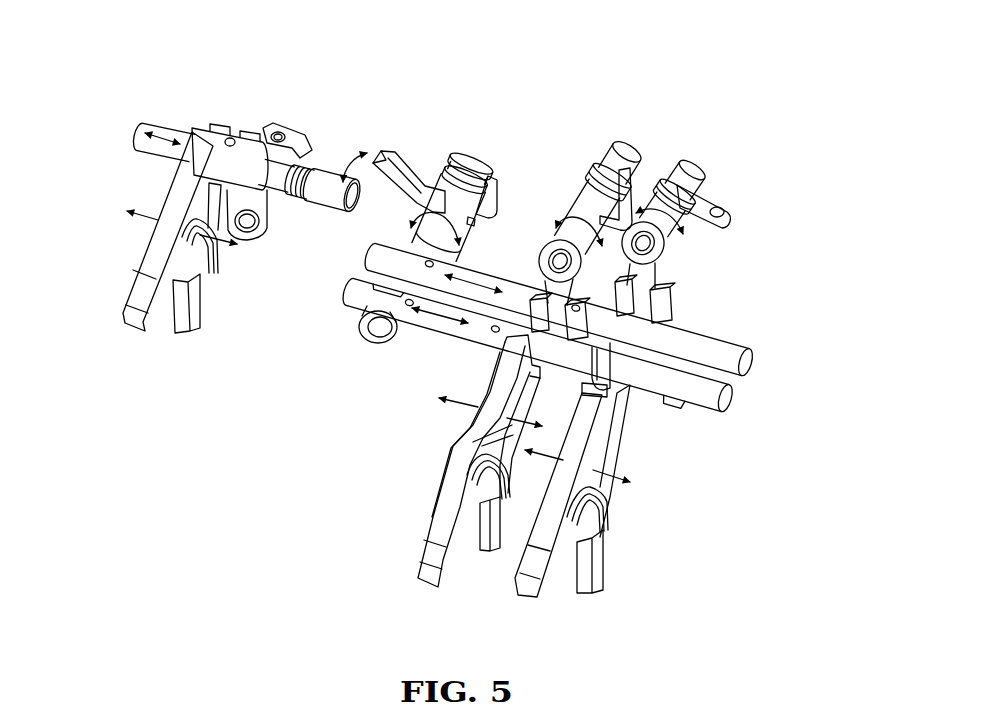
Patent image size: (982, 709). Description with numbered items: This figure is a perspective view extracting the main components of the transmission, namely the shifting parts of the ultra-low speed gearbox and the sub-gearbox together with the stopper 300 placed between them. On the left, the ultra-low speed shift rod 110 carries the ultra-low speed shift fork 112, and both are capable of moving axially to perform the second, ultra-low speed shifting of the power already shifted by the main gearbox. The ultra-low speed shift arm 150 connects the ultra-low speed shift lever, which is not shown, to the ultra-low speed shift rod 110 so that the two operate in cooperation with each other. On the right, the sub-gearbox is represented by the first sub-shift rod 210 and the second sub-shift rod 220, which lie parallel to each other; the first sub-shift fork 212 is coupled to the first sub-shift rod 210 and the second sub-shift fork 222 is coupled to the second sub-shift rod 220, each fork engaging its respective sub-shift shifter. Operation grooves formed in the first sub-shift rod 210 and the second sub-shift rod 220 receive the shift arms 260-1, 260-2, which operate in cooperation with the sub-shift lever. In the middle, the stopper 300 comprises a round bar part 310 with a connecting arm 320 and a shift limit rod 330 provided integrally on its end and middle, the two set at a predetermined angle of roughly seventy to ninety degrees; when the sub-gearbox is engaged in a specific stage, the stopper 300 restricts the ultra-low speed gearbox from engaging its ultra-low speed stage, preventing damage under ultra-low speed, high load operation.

The ultra-low speed shift rod 110 is at (160, 124).
The ultra-low speed shift fork 112 is at (160, 247).
The ultra-low speed shift arm 150 is at (247, 203).
The stopper 300 is at (508, 66).
The round bar part 310 is at (480, 157).
The connecting arm 320 is at (440, 238).
The shift limit rod 330 is at (396, 152).
The second sub-shift rod 220 is at (727, 353).
The first sub-shift rod 210 is at (713, 392).
The first sub-shift fork 212 is at (473, 428).
The second sub-shift fork 222 is at (603, 437).
The shift arm 260-1 is at (625, 150).
The shift arm 260-2 is at (693, 167).